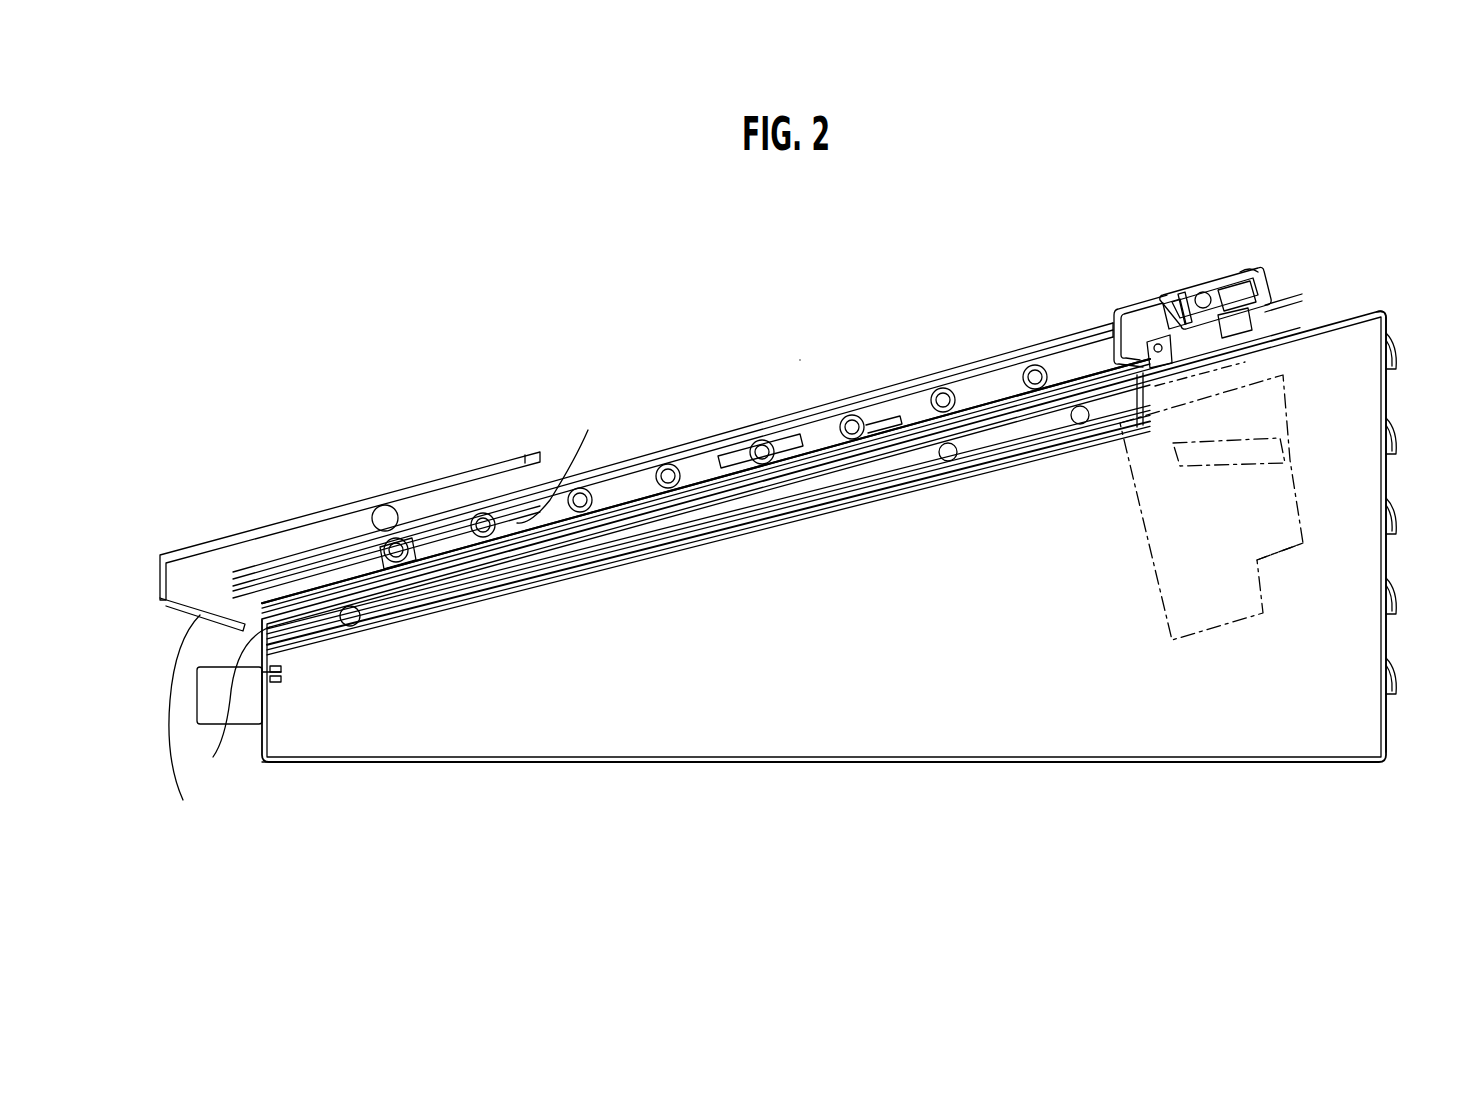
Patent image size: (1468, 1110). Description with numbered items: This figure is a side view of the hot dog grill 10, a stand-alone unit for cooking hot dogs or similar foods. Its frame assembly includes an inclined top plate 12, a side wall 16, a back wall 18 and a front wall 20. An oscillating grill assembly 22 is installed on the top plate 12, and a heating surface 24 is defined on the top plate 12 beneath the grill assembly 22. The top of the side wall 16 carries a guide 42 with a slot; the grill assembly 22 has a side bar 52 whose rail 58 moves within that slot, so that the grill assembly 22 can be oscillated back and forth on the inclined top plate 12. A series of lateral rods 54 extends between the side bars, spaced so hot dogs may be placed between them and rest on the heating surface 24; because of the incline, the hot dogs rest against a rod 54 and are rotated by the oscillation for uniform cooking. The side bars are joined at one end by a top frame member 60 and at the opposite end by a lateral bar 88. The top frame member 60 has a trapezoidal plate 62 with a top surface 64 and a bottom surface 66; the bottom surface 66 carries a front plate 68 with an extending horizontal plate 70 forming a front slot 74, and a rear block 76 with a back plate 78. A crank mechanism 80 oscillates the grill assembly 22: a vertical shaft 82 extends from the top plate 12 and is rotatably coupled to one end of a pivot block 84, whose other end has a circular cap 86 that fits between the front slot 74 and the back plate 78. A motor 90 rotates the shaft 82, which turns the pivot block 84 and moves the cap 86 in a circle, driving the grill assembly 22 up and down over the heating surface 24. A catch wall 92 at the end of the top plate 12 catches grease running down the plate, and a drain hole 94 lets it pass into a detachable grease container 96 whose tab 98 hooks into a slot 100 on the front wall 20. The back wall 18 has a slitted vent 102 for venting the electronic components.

The hot dog grill 10 is at (843, 305).
The inclined top plate 12 is at (982, 410).
The side wall 16 is at (915, 730).
The back wall 18 is at (1388, 730).
The front wall 20 is at (262, 740).
The oscillating grill assembly 22 is at (1010, 363).
The heating surface 24 is at (698, 490).
The guide 42 is at (343, 520).
The side bar 52 is at (800, 453).
The lateral rods 54 is at (647, 470).
The rail 58 is at (445, 505).
The top frame member 60 is at (1260, 270).
The trapezoidal plate 62 is at (1270, 293).
The top surface 64 is at (1168, 300).
The bottom surface 66 is at (1210, 293).
The front plate 68 is at (1288, 296).
The horizontal plate 70 is at (1267, 313).
The front slot 74 is at (1227, 290).
The rear block 76 is at (1137, 297).
The back plate 78 is at (1190, 293).
The crank mechanism 80 is at (1300, 372).
The vertical shaft 82 is at (1118, 305).
The pivot block 84 is at (1382, 300).
The circular cap 86 is at (1247, 267).
The lateral bar 88 is at (388, 505).
The motor 90 is at (1293, 512).
The catch wall 92 is at (189, 723).
The drain hole 94 is at (229, 706).
The detachable grease container 96 is at (232, 715).
The tab 98 is at (283, 670).
The slot 100 is at (278, 672).
The vent 102 is at (1395, 598).